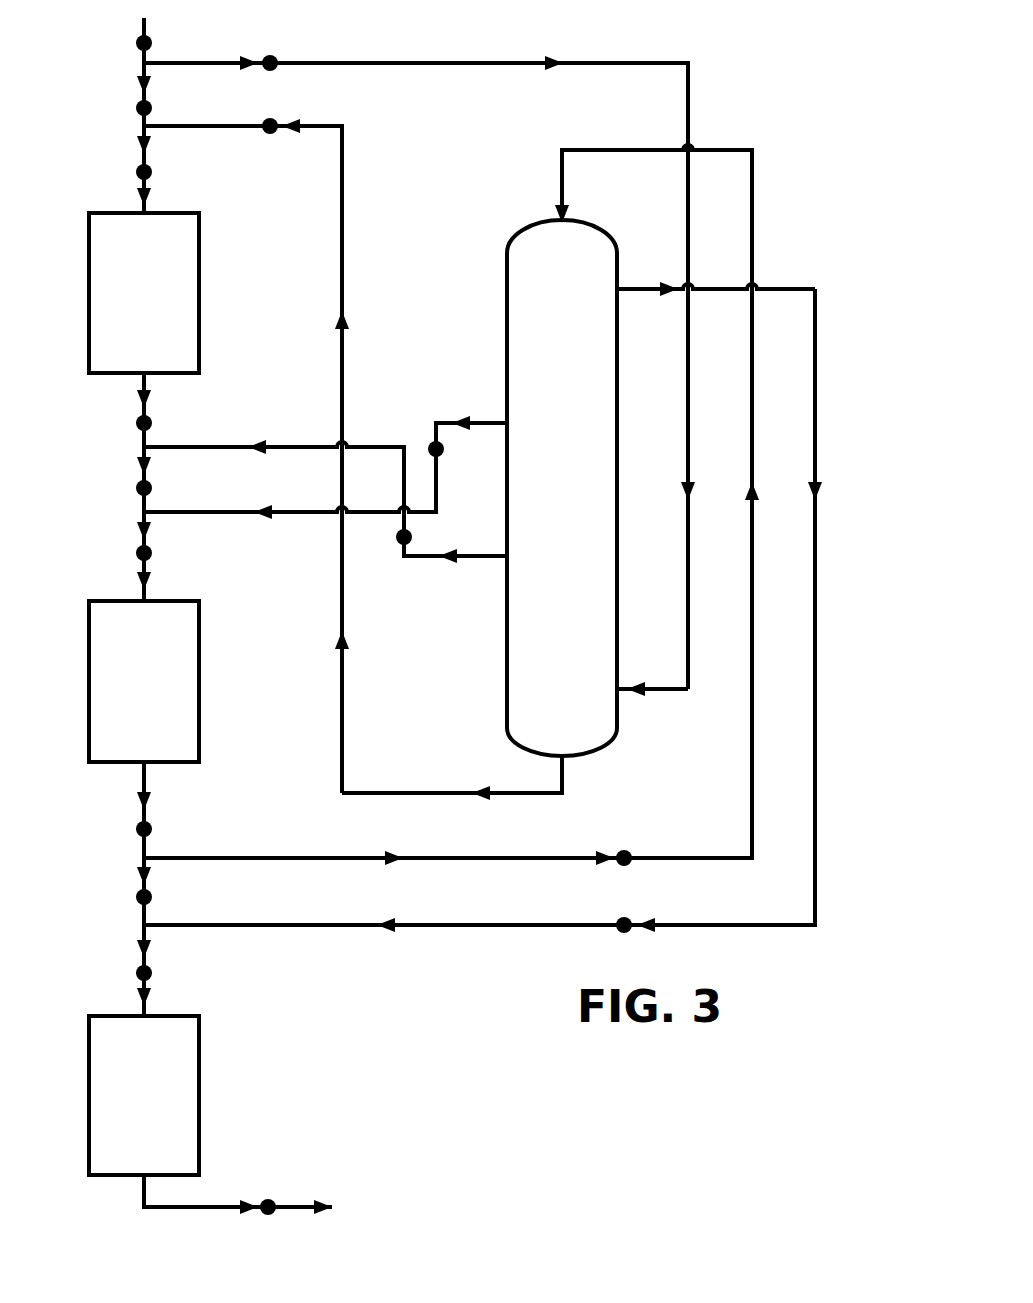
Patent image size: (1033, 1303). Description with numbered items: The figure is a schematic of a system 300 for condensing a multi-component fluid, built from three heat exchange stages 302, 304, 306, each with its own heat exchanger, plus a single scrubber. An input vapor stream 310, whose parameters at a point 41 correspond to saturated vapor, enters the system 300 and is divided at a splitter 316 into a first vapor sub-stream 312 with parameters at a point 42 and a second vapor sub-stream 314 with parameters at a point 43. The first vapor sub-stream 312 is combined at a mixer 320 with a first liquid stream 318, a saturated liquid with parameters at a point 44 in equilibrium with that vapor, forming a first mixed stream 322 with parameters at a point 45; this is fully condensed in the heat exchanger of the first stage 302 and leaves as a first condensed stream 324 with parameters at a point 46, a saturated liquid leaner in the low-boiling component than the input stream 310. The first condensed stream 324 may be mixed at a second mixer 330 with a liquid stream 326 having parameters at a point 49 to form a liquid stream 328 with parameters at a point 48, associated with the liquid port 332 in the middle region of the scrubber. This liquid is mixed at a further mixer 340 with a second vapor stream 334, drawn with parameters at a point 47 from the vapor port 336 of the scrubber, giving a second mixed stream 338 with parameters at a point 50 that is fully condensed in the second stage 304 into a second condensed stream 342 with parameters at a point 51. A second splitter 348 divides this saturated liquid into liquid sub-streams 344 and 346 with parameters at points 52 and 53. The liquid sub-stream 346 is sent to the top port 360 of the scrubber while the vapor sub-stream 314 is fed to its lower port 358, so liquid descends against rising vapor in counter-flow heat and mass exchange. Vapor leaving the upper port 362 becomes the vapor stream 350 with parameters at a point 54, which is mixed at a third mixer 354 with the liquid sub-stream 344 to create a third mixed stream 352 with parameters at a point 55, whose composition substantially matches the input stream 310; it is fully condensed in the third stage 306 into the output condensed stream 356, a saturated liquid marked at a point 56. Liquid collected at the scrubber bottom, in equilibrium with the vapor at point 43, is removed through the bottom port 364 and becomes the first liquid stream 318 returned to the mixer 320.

The system for condensing a multi-component fluid 300 is at (775, 100).
The first heat exchange stage 302 is at (232, 295).
The second heat exchange stage 304 is at (228, 683).
The third heat exchange stage 306 is at (235, 1095).
The input vapor stream 310 is at (156, 24).
The first vapor sub-stream 312 is at (150, 68).
The second vapor sub-stream 314 is at (365, 70).
The splitter 316 is at (140, 66).
The first liquid stream 318 is at (342, 213).
The mixer 320 is at (140, 136).
The first mixed stream 322 is at (150, 138).
The first condensed stream 324 is at (150, 383).
The liquid stream 326 is at (320, 445).
The liquid stream 328 is at (150, 452).
The second mixer 330 is at (140, 450).
The liquid port 332 is at (508, 557).
The second vapor stream 334 is at (320, 517).
The vapor port 336 is at (510, 412).
The second mixed stream 338 is at (150, 517).
The mixer 340 is at (140, 517).
The second condensed stream 342 is at (150, 777).
The liquid sub-stream 344 is at (320, 855).
The liquid sub-stream 346 is at (150, 862).
The second splitter 348 is at (140, 861).
The vapor stream 350 is at (320, 928).
The third mixed stream 352 is at (150, 930).
The third mixer 354 is at (140, 930).
The output condensed stream 356 is at (296, 1205).
The lower port 358 is at (616, 689).
The top port 360 is at (557, 222).
The upper port 362 is at (616, 289).
The bottom port 364 is at (562, 755).
The point 41 is at (129, 44).
The point 42 is at (129, 109).
The point 43 is at (270, 78).
The point 44 is at (270, 143).
The point 45 is at (129, 173).
The point 46 is at (129, 424).
The point 47 is at (450, 450).
The point 48 is at (129, 489).
The point 49 is at (390, 538).
The point 50 is at (129, 554).
The point 51 is at (129, 830).
The point 52 is at (624, 846).
The point 53 is at (129, 898).
The point 54 is at (624, 912).
The point 55 is at (129, 974).
The point 56 is at (268, 1194).